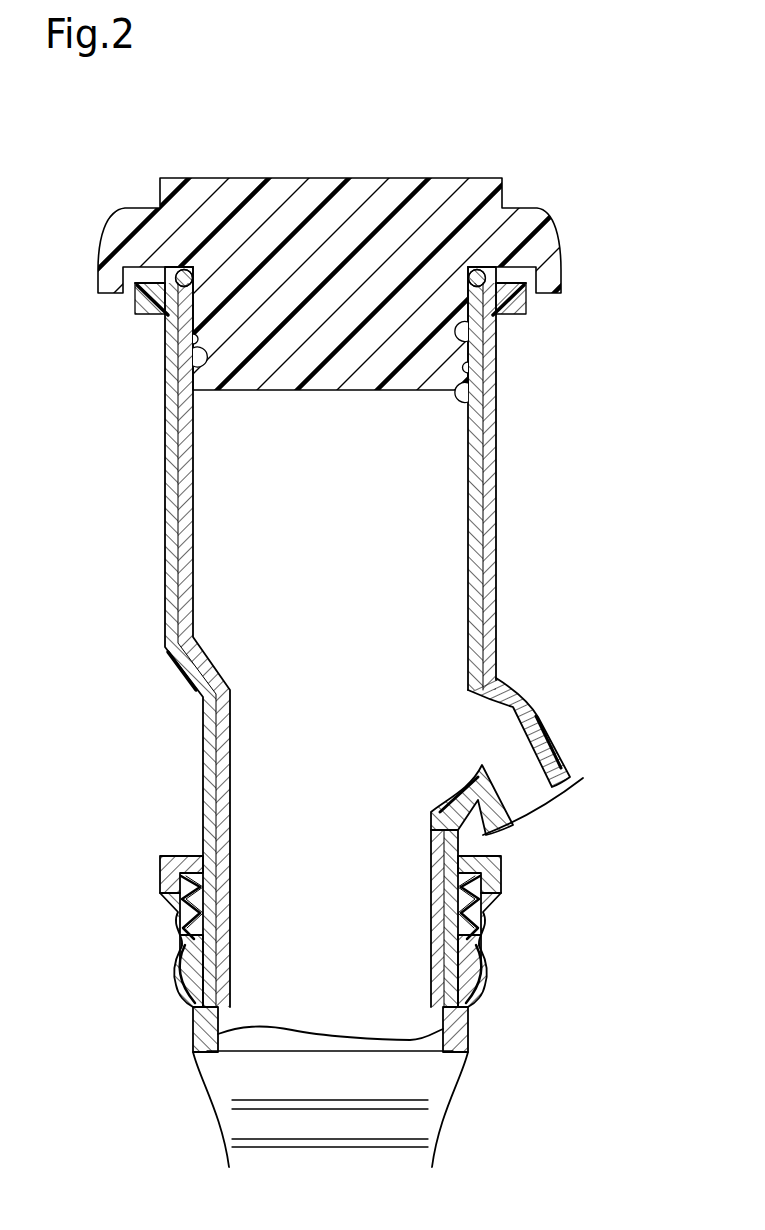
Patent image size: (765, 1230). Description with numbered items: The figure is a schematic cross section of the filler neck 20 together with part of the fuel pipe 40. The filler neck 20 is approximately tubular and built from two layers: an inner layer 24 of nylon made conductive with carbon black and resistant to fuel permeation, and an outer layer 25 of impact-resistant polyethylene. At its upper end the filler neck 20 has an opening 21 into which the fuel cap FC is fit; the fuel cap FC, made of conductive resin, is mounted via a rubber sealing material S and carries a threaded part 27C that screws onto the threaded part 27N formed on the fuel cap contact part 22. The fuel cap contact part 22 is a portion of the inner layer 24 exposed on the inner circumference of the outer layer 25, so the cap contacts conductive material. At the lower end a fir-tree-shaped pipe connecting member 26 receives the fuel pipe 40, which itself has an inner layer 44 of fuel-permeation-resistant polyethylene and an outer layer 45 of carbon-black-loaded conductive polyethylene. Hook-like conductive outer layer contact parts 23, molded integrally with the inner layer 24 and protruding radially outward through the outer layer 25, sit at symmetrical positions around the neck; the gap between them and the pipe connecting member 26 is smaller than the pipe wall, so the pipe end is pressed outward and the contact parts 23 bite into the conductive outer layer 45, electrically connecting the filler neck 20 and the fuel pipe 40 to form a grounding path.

The fuel cap FC is at (333, 178).
The rubber sealing material S is at (175, 278).
The filler neck 20 is at (637, 395).
The opening 21 is at (492, 318).
The fuel cap contact part 22 is at (182, 384).
The conductive outer layer contact part 23 is at (160, 880).
The inner layer 24 is at (178, 523).
The outer layer 25 is at (167, 550).
The pipe connecting member 26 is at (183, 924).
The threaded part 27N is at (188, 339).
The threaded part 27C is at (192, 360).
The fuel pipe 40 is at (470, 1102).
The inner layer 44 is at (192, 1019).
The outer layer 45 is at (177, 966).